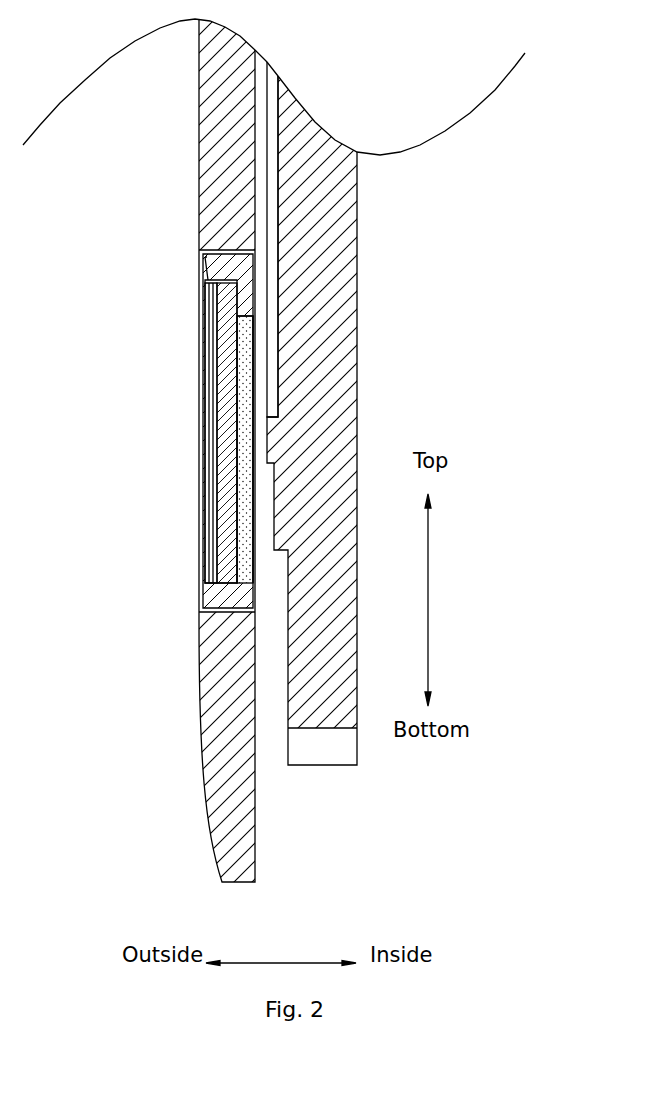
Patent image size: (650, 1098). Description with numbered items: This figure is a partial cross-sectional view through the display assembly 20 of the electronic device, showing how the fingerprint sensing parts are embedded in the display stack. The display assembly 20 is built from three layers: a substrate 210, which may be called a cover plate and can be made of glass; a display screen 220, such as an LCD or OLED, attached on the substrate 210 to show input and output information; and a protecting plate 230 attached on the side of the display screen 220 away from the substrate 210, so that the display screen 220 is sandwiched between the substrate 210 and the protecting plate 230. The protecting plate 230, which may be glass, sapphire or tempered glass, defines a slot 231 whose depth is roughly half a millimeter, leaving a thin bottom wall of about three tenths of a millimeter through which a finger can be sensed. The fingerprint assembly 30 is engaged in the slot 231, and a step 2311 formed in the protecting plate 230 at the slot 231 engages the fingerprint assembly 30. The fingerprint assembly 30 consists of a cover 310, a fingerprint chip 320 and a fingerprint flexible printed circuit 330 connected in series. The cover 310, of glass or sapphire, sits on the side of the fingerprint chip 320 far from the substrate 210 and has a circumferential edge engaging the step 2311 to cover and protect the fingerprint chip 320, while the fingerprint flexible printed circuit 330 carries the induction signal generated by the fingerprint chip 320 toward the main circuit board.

The display assembly 20 is at (374, 451).
The substrate 210 is at (332, 187).
The display screen 220 is at (272, 298).
The protecting plate 230 is at (232, 190).
The slot 231 is at (172, 437).
The step 2311 is at (203, 282).
The fingerprint assembly 30 is at (135, 433).
The cover 310 is at (208, 387).
The fingerprint chip 320 is at (226, 468).
The fingerprint flexible printed circuit 330 is at (240, 530).